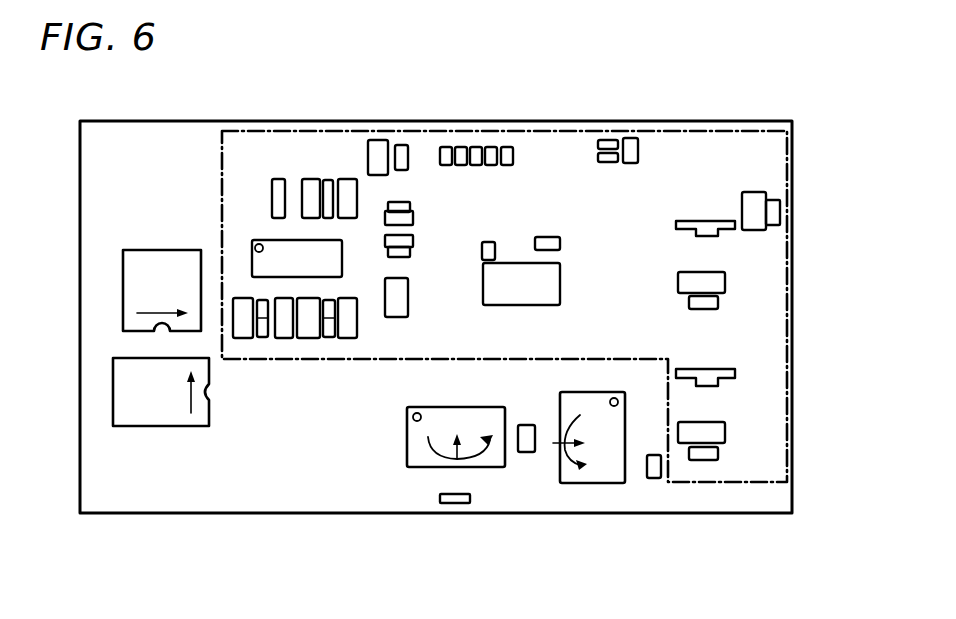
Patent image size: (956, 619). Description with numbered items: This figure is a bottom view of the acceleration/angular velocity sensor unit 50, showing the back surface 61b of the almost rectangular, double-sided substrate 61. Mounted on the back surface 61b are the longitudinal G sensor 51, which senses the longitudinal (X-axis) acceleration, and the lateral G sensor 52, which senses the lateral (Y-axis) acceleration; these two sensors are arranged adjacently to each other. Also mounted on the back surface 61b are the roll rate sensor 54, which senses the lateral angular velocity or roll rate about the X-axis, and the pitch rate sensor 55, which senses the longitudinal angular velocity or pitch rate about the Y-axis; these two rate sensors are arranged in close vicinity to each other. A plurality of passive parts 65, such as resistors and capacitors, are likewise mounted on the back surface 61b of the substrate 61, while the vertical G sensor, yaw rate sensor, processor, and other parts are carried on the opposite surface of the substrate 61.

The sensor unit 50 is at (708, 96).
The longitudinal G sensor 51 is at (148, 250).
The lateral G sensor 52 is at (173, 428).
The roll rate sensor 54 is at (607, 483).
The pitch rate sensor 55 is at (430, 467).
The substrate 61 is at (393, 122).
The back surface 61b is at (427, 148).
The passive parts 65 is at (571, 133).